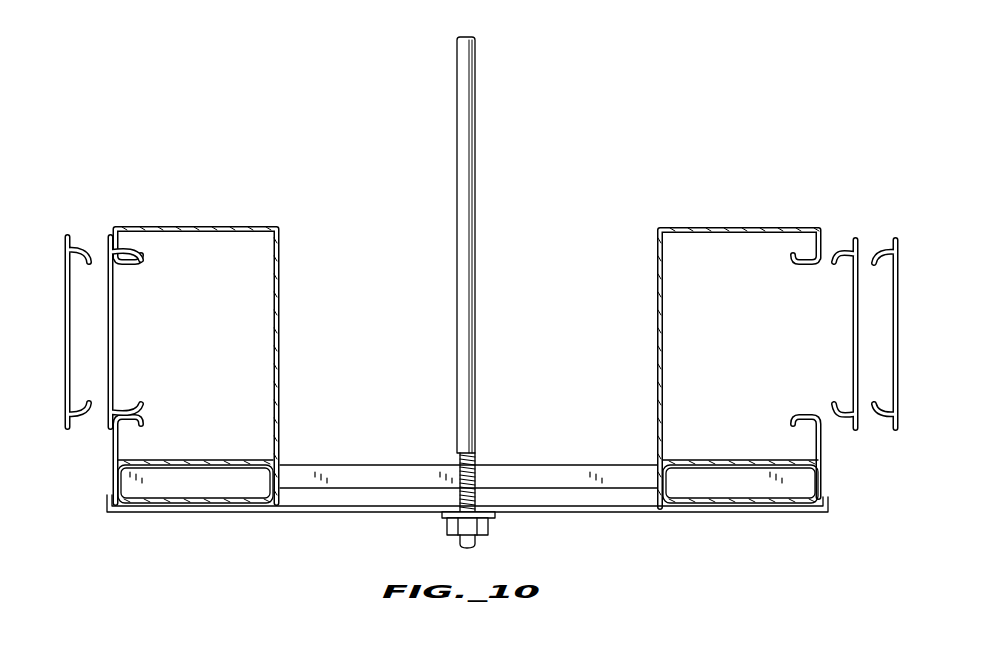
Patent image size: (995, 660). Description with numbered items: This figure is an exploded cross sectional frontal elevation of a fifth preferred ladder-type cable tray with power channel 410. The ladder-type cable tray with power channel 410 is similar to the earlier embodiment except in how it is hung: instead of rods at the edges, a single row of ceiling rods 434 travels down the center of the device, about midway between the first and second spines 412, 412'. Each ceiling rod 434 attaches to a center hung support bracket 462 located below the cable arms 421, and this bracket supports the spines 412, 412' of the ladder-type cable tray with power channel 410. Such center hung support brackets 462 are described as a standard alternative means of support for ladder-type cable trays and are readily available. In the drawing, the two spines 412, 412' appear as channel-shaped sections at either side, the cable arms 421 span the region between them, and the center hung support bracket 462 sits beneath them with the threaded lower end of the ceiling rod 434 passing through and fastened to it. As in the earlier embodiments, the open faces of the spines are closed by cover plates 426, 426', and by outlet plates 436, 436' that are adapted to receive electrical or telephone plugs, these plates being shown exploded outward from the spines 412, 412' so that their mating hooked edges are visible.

The ladder-type cable tray with power channel 410 is at (299, 68).
The first spine 412 is at (738, 340).
The second spine 412' is at (197, 332).
The cable arms 421 is at (303, 465).
The cover plate 426 is at (811, 334).
The cover plate 426' is at (156, 332).
The ceiling rod 434 is at (457, 235).
The outlet plate 436 is at (862, 314).
The outlet plate 436' is at (78, 314).
The center hung support bracket 462 is at (315, 510).